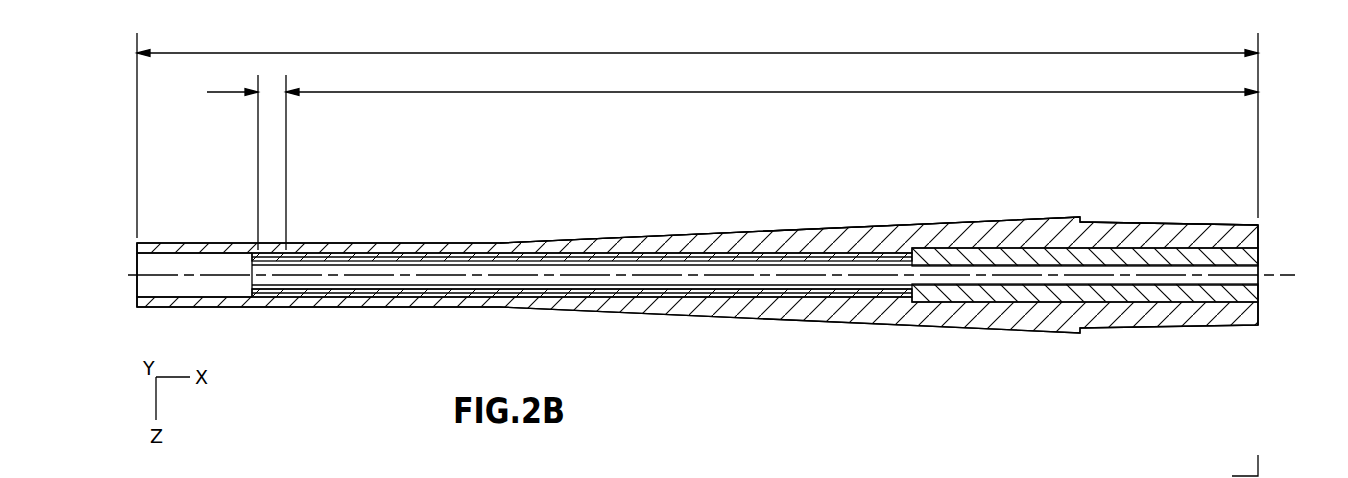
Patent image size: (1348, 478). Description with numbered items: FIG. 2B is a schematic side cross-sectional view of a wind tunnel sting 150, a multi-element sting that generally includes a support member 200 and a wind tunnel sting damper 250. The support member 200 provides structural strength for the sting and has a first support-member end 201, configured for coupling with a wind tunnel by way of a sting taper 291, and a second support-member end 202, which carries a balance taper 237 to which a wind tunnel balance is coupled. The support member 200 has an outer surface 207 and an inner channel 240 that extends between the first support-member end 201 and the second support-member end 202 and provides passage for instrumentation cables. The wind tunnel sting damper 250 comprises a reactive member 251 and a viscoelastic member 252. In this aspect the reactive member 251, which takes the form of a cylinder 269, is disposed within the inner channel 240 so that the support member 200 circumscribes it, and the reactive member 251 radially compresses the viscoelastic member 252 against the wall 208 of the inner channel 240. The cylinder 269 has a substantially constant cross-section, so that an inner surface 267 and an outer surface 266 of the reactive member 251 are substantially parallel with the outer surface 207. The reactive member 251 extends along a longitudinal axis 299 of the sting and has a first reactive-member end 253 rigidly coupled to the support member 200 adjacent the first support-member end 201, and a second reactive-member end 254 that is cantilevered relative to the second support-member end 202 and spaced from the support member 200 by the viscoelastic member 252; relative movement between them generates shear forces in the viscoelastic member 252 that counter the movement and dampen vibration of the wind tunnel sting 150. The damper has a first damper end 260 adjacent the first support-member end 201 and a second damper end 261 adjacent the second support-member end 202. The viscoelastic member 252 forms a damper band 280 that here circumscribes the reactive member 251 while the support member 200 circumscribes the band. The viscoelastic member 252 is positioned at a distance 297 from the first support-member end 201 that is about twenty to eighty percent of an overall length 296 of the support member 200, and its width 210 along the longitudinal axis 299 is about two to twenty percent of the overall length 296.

The wind tunnel sting 150 is at (819, 195).
The support member 200 is at (678, 225).
The first support-member end 201 is at (1278, 317).
The second support-member end 202 is at (126, 322).
The outer surface 207 is at (873, 226).
The wall 208 is at (322, 262).
The width 210 is at (272, 90).
The balance taper 237 is at (184, 286).
The inner channel 240 is at (152, 263).
The wind tunnel sting damper 250 is at (616, 306).
The reactive member 251 is at (475, 288).
The viscoelastic member 252 is at (270, 297).
The first reactive-member end 253 is at (894, 314).
The second reactive-member end 254 is at (242, 252).
The first damper end 260 is at (922, 232).
The second damper end 261 is at (250, 320).
The outer surface 266 is at (362, 260).
The inner surface 267 is at (432, 266).
The cylinder 269 is at (357, 290).
The damper band 280 is at (304, 304).
The sting taper 291 is at (1200, 224).
The overall length 296 is at (657, 53).
The distance 297 is at (737, 92).
The longitudinal axis 299 is at (1282, 275).